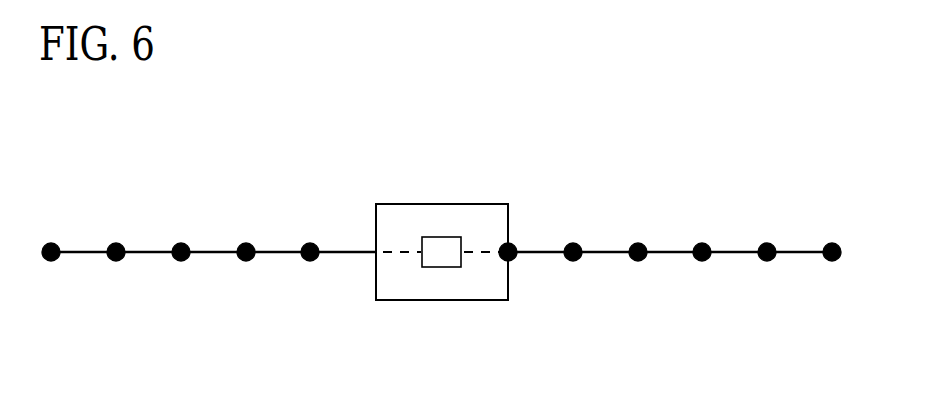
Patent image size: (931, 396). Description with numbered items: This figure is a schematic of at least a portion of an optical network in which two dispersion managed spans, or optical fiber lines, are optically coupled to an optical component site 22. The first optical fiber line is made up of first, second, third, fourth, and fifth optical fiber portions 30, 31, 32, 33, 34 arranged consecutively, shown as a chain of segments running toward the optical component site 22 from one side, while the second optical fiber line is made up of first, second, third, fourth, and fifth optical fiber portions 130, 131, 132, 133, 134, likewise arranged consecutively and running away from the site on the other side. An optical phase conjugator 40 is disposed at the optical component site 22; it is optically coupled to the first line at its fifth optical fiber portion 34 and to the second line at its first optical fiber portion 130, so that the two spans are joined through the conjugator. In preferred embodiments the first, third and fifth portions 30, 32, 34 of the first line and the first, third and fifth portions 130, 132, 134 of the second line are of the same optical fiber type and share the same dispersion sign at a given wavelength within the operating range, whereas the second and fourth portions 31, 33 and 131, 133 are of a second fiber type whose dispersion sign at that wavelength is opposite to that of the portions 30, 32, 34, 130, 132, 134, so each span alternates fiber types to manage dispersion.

The optical component site 22 is at (443, 178).
The optical phase conjugator 40 is at (447, 267).
The first optical fiber portion 30 is at (88, 253).
The second optical fiber portion 31 is at (154, 253).
The third optical fiber portion 32 is at (217, 253).
The fourth optical fiber portion 33 is at (282, 253).
The fifth optical fiber portion 34 is at (348, 253).
The first optical fiber portion 130 is at (542, 253).
The second optical fiber portion 131 is at (606, 253).
The third optical fiber portion 132 is at (670, 253).
The fourth optical fiber portion 133 is at (733, 253).
The fifth optical fiber portion 134 is at (797, 253).